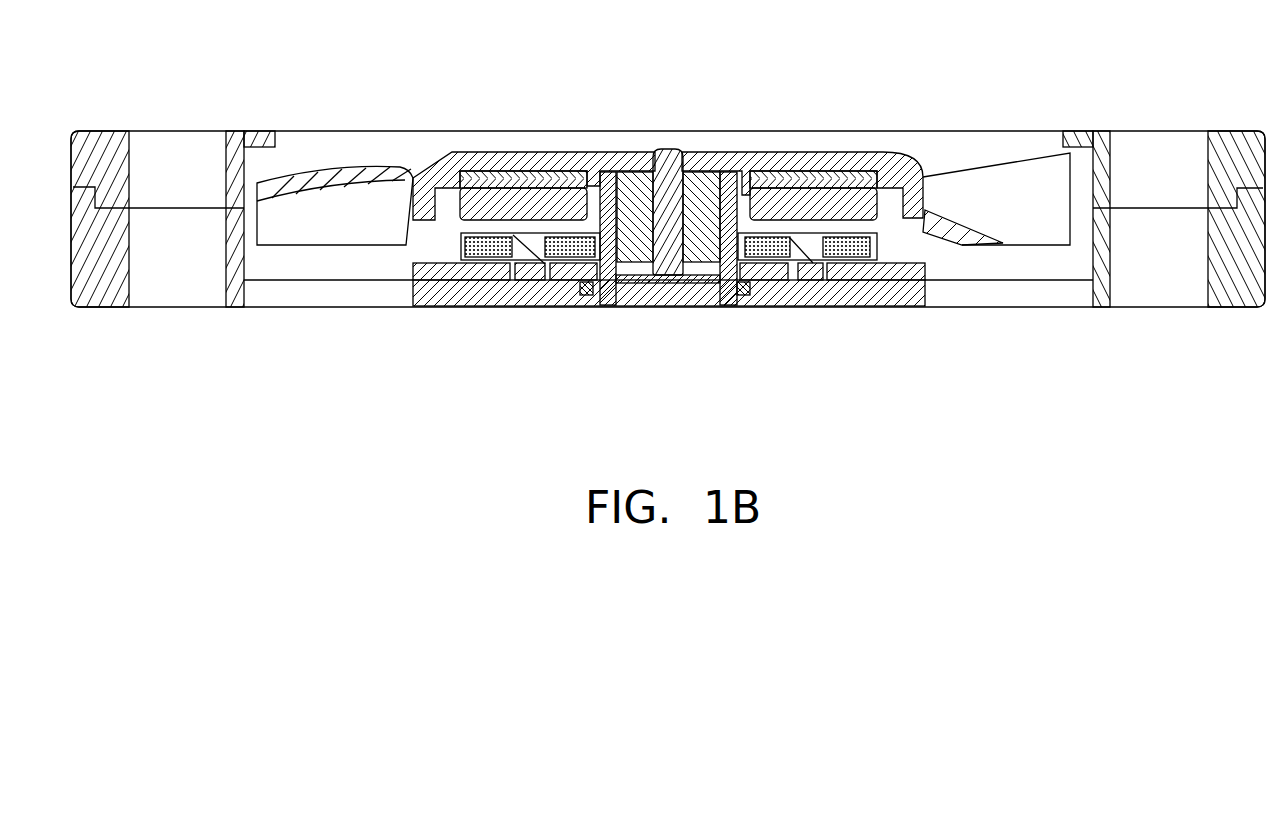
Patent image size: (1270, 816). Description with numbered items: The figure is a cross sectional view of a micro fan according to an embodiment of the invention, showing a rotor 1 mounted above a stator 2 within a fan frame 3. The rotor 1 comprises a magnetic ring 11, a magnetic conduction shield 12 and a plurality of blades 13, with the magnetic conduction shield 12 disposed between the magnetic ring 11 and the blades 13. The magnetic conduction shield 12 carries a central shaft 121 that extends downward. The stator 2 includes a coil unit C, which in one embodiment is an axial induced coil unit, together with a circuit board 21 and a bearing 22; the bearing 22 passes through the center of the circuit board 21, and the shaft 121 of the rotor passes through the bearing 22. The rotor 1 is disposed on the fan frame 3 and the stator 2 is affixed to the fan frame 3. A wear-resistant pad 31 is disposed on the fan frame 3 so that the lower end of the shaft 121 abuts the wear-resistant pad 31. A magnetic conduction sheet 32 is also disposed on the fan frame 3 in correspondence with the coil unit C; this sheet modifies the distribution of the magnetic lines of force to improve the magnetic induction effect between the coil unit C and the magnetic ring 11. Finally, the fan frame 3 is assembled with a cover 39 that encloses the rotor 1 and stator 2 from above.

The rotor 1 is at (708, 128).
The magnetic ring 11 is at (668, 142).
The magnetic conduction shield 12 is at (494, 182).
The blades 13 is at (441, 160).
The shaft 121 is at (666, 190).
The cover 39 is at (238, 140).
The stator 2 is at (666, 295).
The circuit board 21 is at (433, 300).
The bearing 22 is at (668, 271).
The coil unit C is at (493, 258).
The fan frame 3 is at (669, 325).
The wear-resistant pad 31 is at (700, 302).
The magnetic conduction sheet 32 is at (746, 297).